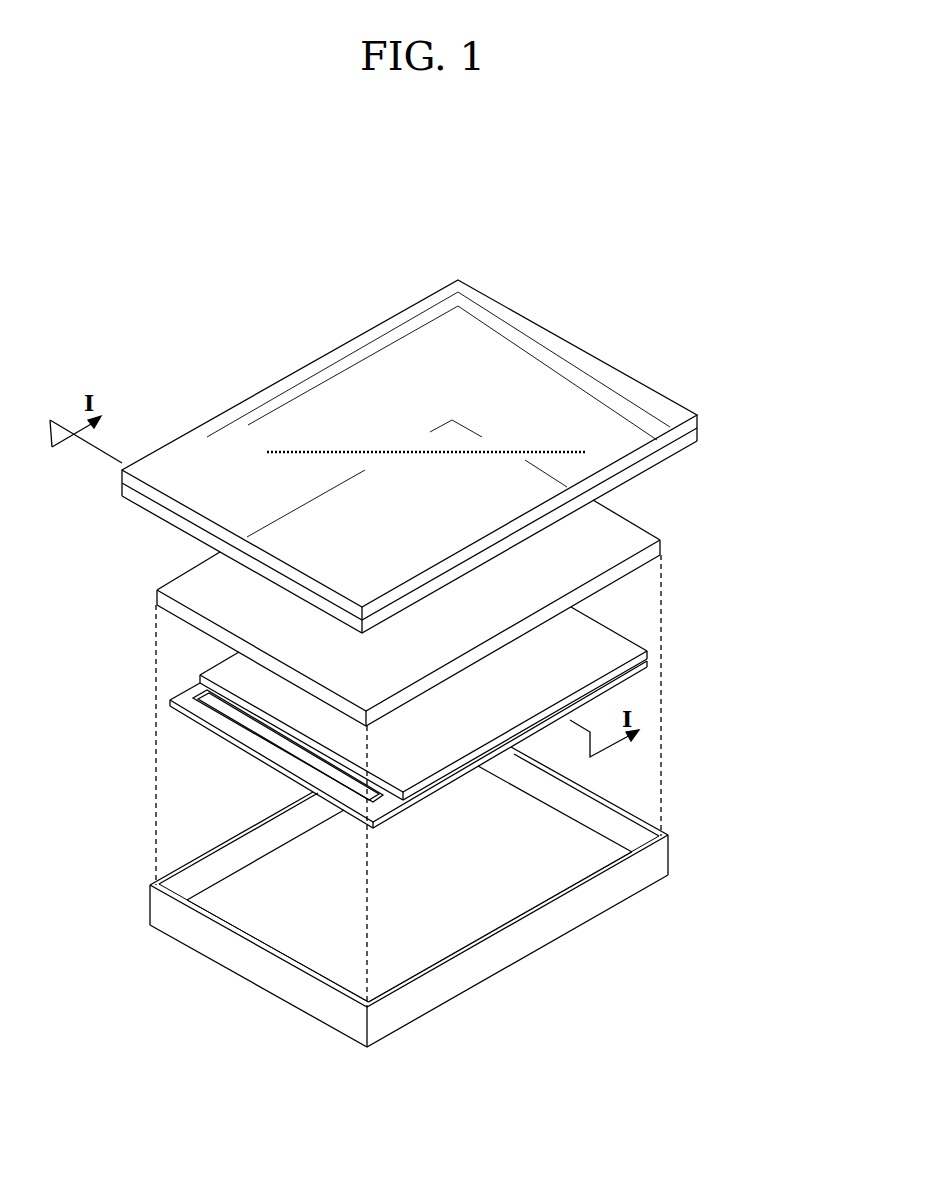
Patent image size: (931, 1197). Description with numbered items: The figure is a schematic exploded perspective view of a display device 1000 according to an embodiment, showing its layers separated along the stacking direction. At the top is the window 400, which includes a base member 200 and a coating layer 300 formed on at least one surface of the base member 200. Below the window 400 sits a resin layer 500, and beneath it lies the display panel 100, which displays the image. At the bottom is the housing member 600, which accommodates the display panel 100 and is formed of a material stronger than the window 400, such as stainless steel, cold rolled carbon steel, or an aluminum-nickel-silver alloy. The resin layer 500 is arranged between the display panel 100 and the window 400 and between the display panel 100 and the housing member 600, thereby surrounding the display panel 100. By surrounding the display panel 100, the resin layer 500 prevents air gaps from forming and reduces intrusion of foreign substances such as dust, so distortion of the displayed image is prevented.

The display device 1000 is at (676, 251).
The window 400 is at (474, 456).
The coating layer 300 is at (699, 421).
The base member 200 is at (699, 438).
The resin layer 500 is at (661, 549).
The display panel 100 is at (628, 672).
The housing member 600 is at (658, 858).